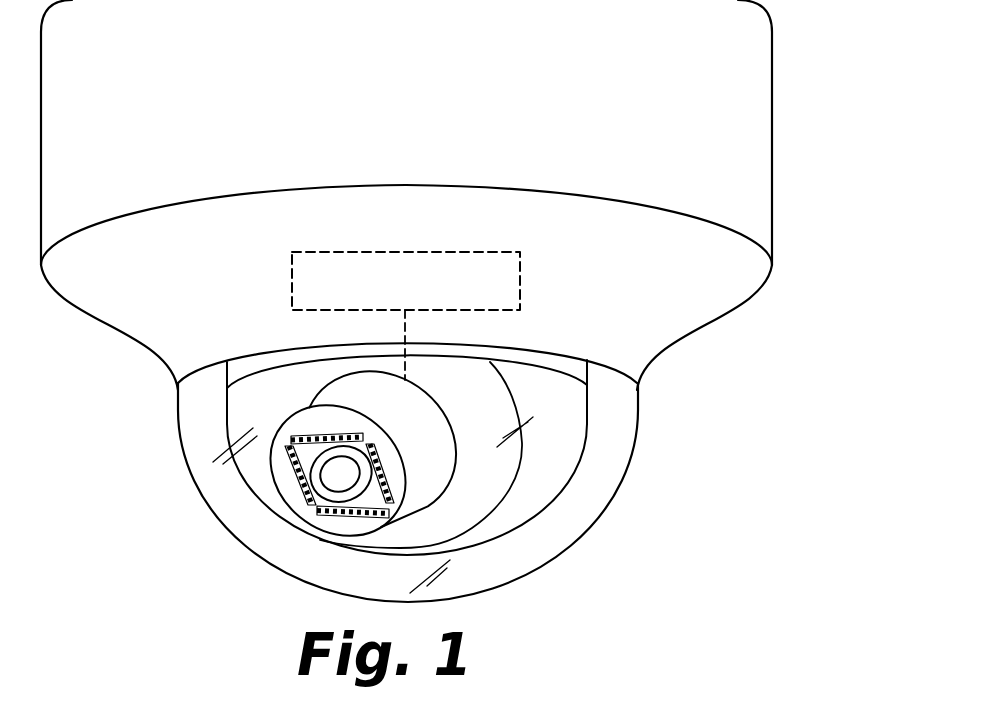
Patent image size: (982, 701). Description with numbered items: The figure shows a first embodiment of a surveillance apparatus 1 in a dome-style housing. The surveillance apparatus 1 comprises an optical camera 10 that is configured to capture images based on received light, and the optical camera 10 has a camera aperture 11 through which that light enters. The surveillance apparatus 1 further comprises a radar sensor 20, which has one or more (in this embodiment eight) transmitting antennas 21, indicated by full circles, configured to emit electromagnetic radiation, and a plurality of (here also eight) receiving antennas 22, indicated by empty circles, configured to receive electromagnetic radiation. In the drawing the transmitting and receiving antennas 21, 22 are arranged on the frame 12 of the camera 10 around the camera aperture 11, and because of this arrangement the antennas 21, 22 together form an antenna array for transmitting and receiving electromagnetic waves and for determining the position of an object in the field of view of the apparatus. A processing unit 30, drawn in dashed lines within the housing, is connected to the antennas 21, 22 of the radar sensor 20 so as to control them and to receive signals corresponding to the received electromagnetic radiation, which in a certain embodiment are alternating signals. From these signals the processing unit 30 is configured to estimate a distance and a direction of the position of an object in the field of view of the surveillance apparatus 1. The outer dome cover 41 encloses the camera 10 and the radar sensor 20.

The surveillance apparatus 1 is at (806, 27).
The optical camera 10 is at (428, 427).
The camera aperture 11 is at (330, 476).
The frame 12 is at (310, 486).
The radar sensor 20 is at (278, 422).
The transmitting antennas 21 is at (347, 508).
The receiving antennas 22 is at (392, 500).
The processing unit 30 is at (291, 279).
The dome cover 41 is at (563, 547).